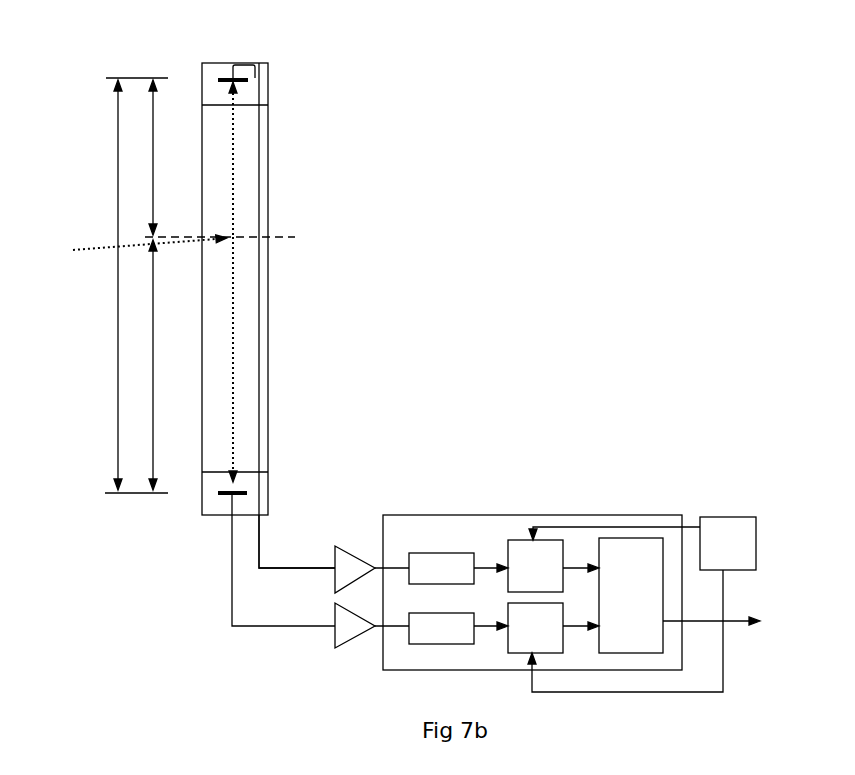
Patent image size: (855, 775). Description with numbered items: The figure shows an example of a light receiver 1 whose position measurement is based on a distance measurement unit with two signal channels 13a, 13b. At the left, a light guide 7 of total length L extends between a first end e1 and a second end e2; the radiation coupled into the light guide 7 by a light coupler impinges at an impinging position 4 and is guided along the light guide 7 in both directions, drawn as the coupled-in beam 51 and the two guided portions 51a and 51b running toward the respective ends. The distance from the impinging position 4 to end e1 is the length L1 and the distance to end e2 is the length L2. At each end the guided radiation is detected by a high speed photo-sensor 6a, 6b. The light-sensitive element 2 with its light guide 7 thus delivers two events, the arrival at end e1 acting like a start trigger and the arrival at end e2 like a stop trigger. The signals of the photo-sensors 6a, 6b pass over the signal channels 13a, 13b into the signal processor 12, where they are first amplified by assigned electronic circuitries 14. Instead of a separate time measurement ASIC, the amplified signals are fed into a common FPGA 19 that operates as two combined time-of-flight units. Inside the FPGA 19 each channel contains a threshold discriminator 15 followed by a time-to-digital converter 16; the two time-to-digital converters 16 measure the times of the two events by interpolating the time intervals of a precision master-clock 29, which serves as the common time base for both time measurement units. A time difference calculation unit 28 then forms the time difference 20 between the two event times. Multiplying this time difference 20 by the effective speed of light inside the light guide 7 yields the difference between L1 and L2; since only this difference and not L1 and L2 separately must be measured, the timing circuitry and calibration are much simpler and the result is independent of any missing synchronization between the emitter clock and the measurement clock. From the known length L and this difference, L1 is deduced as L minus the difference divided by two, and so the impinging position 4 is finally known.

The light receiver 1 is at (527, 170).
The optical sensor 2 is at (298, 138).
The impinging position 4 is at (232, 240).
The light guide 7 is at (250, 320).
The high speed photo-sensor 6a is at (233, 80).
The high speed photo-sensor 6b is at (250, 491).
The light beam 51 is at (137, 247).
The first beam portion 51a is at (233, 150).
The second beam portion 51b is at (233, 378).
The length L is at (117, 120).
The length L1 is at (153, 160).
The length L2 is at (152, 422).
The end e1 is at (205, 45).
The end e2 is at (178, 553).
The signal processor 12 is at (557, 452).
The signal channel 13a is at (292, 569).
The signal channel 13b is at (283, 627).
The electronic circuitries 14 is at (347, 617).
The threshold discriminators 15 is at (450, 622).
The time-to-digital converters 16 is at (547, 613).
The FPGA 19 is at (625, 515).
The time difference 20 is at (730, 622).
The time difference calculation unit 28 is at (631, 595).
The precision master-clock 29 is at (642, 604).